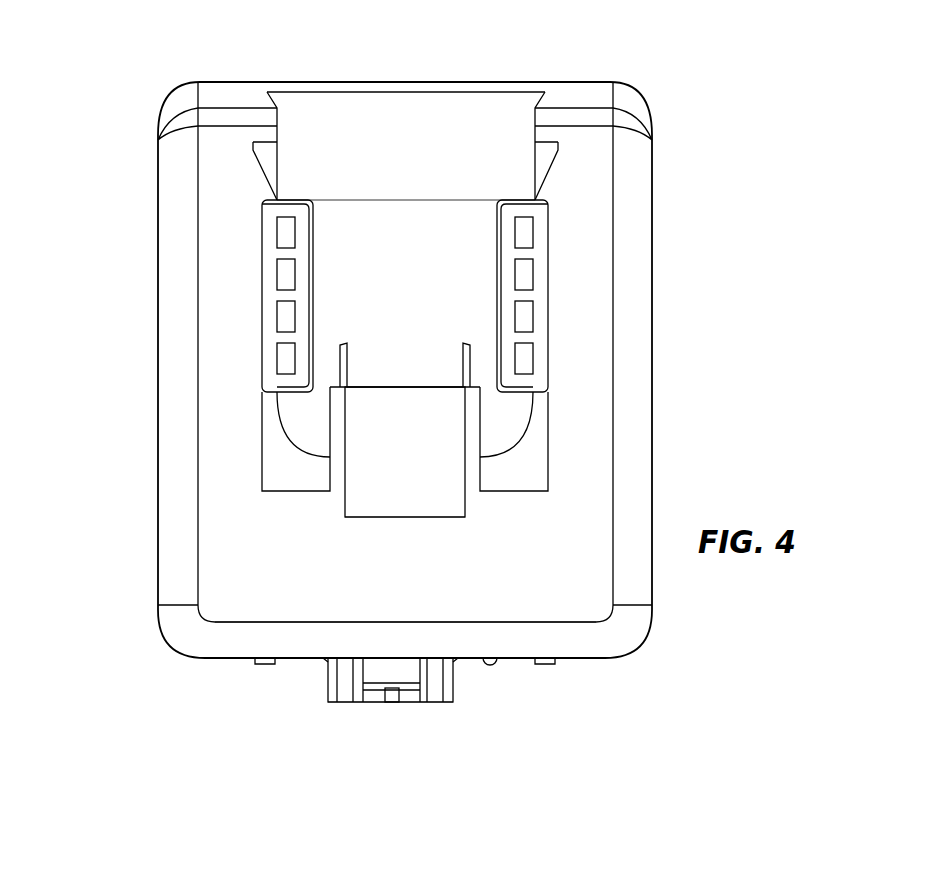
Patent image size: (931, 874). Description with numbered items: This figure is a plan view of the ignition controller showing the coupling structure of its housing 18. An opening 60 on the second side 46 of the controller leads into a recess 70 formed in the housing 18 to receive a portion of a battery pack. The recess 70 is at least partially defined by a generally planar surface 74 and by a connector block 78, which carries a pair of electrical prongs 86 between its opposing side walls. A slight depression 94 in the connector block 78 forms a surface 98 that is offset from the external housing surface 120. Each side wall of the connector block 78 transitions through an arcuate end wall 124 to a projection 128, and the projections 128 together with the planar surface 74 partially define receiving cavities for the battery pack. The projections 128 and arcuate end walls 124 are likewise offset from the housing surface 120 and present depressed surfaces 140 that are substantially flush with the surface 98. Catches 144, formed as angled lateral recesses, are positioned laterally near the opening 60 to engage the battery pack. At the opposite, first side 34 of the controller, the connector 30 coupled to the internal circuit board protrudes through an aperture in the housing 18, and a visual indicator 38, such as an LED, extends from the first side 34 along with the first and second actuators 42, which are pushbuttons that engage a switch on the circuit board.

The housing 18 is at (142, 78).
The second side 46 is at (553, 66).
The opening 60 is at (410, 120).
The planar surface 74 is at (430, 188).
The catches 144 is at (262, 152).
The projections 128 is at (268, 276).
The arcuate end walls 124 is at (270, 410).
The depressed surfaces 140 is at (315, 484).
The surface 98 is at (425, 450).
The electrical prongs 86 is at (343, 345).
The connector block 78 is at (410, 378).
The depression 94 is at (423, 492).
The external housing surface 120 is at (410, 604).
The recess 70 is at (455, 232).
The actuators 42 is at (262, 666).
The connector 30 is at (330, 700).
The visual indicator 38 is at (493, 668).
The first side 34 is at (430, 727).